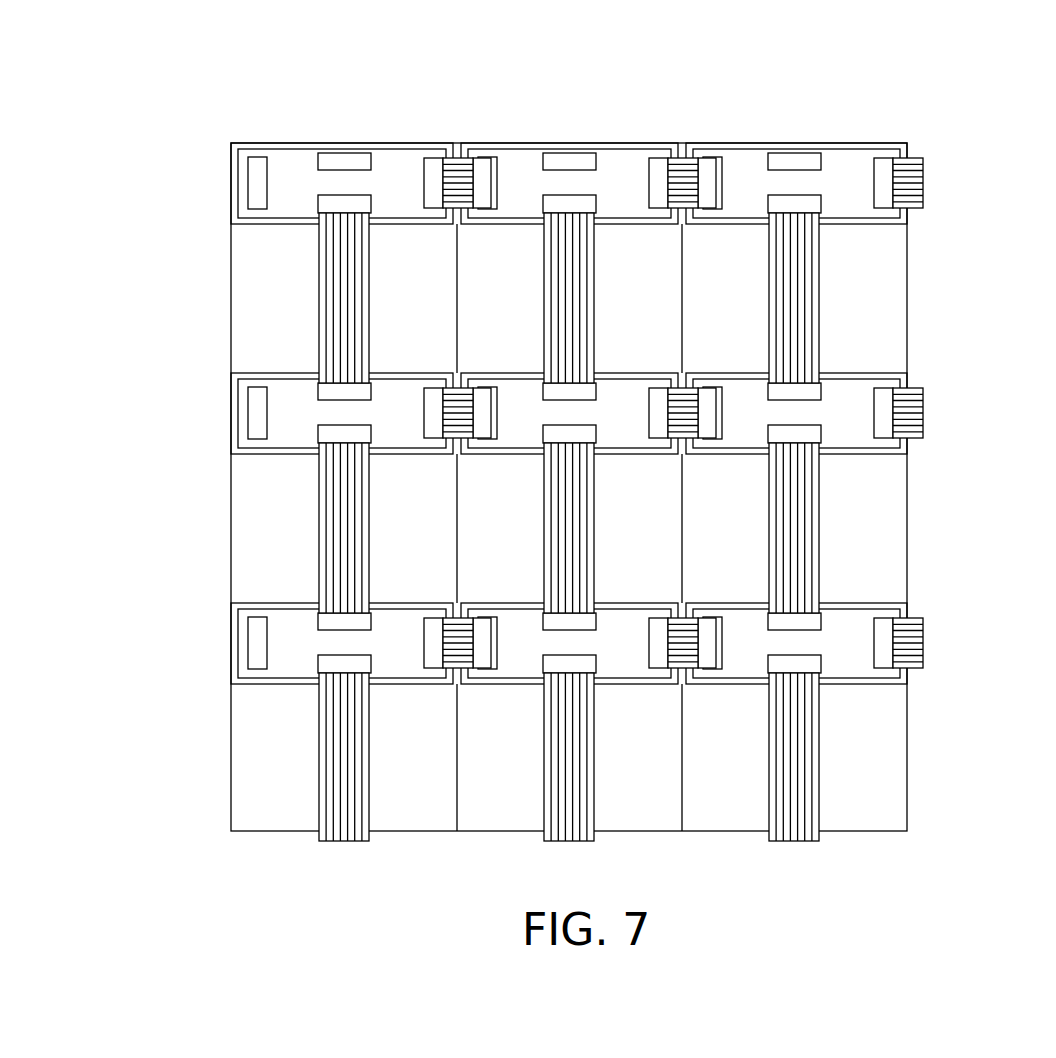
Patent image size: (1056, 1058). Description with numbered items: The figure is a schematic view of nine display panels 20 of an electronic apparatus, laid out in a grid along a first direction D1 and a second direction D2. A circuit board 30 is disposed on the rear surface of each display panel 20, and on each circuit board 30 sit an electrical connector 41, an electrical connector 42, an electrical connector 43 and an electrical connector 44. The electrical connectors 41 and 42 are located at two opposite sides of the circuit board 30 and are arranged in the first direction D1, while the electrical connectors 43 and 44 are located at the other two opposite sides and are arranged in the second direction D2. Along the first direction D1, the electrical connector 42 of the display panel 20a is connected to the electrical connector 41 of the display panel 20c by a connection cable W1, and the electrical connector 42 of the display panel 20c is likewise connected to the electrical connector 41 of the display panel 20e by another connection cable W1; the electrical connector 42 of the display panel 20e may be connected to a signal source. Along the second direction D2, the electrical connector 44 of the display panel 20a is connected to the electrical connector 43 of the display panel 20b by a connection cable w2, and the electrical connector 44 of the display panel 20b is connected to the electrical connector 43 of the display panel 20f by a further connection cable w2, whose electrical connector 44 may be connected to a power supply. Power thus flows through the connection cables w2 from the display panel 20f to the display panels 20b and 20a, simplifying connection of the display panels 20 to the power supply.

The display panel 20 is at (916, 483).
The display panel 20a is at (290, 133).
The display panel 20b is at (514, 133).
The display panel 20c is at (222, 438).
The display panel 20e is at (222, 668).
The display panel 20f is at (740, 133).
The circuit board 30 is at (240, 148).
The electrical connector 41 is at (347, 158).
The electrical connector 42 is at (318, 205).
The electrical connector 43 is at (255, 182).
The electrical connector 44 is at (656, 373).
The connection cable W1 is at (320, 294).
The connection cable w2 is at (455, 162).
The first direction D1 is at (935, 741).
The second direction D2 is at (889, 870).